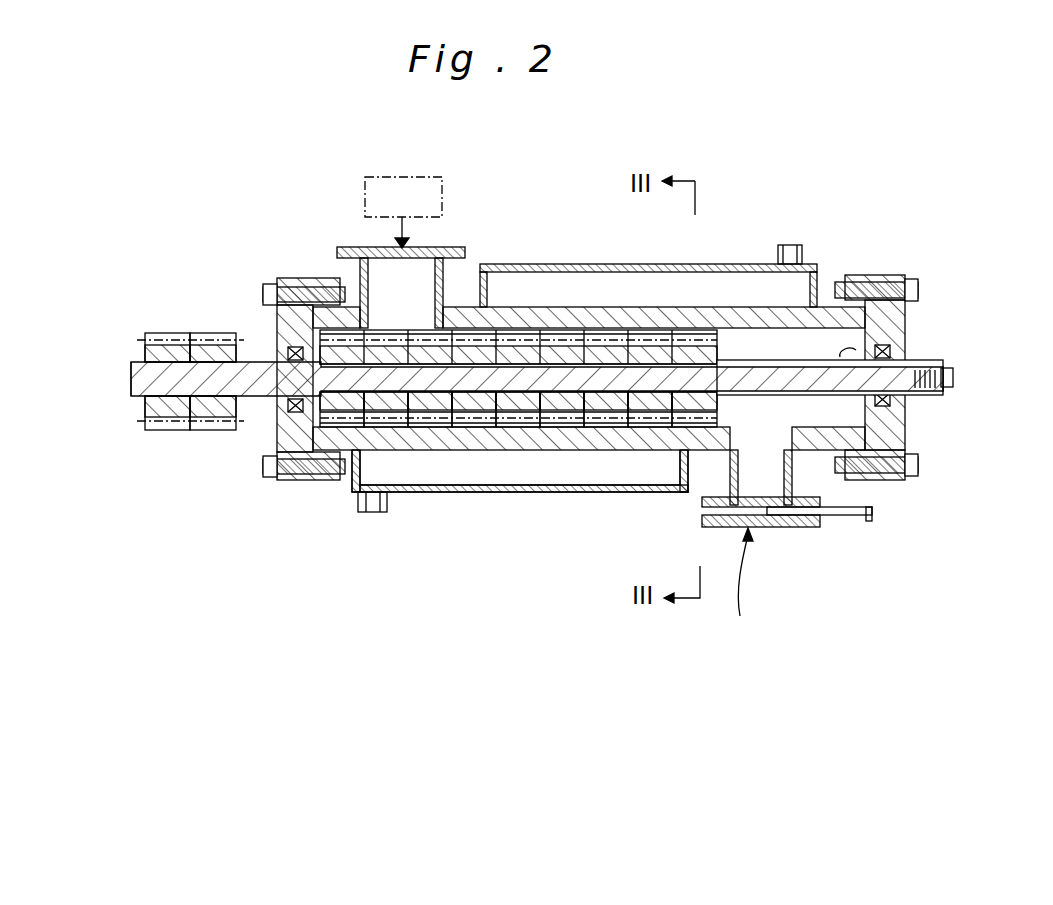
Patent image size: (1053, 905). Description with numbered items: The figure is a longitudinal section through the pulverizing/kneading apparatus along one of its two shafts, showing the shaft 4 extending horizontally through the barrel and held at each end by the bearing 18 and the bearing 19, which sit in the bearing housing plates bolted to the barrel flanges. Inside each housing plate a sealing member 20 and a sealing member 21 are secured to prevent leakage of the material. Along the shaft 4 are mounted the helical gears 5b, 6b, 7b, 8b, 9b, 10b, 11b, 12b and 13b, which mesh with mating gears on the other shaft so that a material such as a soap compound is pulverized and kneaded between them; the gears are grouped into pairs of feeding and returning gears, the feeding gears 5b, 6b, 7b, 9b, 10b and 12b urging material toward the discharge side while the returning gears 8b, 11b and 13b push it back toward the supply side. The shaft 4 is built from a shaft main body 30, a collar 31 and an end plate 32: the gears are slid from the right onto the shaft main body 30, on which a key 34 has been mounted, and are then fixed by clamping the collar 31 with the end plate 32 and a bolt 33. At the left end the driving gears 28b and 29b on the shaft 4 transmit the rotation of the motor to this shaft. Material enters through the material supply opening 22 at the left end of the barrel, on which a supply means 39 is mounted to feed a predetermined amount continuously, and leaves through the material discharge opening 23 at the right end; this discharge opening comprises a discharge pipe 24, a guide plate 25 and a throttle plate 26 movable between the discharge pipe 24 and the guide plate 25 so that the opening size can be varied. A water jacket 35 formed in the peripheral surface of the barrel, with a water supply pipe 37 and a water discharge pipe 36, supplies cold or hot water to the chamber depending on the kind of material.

The shaft 4 is at (256, 362).
The helical gear 5b is at (322, 410).
The helical gear 6b is at (362, 412).
The helical gear 7b is at (430, 408).
The helical gear 8b is at (478, 408).
The helical gear 9b is at (518, 408).
The helical gear 10b is at (560, 408).
The helical gear 11b is at (600, 408).
The helical gear 12b is at (640, 408).
The helical gear 13b is at (682, 408).
The bearing 18 is at (290, 420).
The bearing 19 is at (860, 405).
The sealing member 20 is at (298, 350).
The sealing member 21 is at (892, 408).
The material supply opening 22 is at (452, 248).
The material discharge opening 23 is at (743, 586).
The discharge pipe 24 is at (796, 480).
The guide plate 25 is at (802, 528).
The throttle plate 26 is at (850, 521).
The driving gear 28b is at (158, 333).
The driving gear 29b is at (207, 333).
The shaft main body 30 is at (132, 370).
The collar 31 is at (843, 357).
The end plate 32 is at (943, 358).
The bolt 33 is at (953, 382).
The key 34 is at (525, 355).
The water jacket 35 is at (734, 264).
The water discharge pipe 36 is at (798, 247).
The water supply pipe 37 is at (365, 512).
The supply means 39 is at (365, 204).